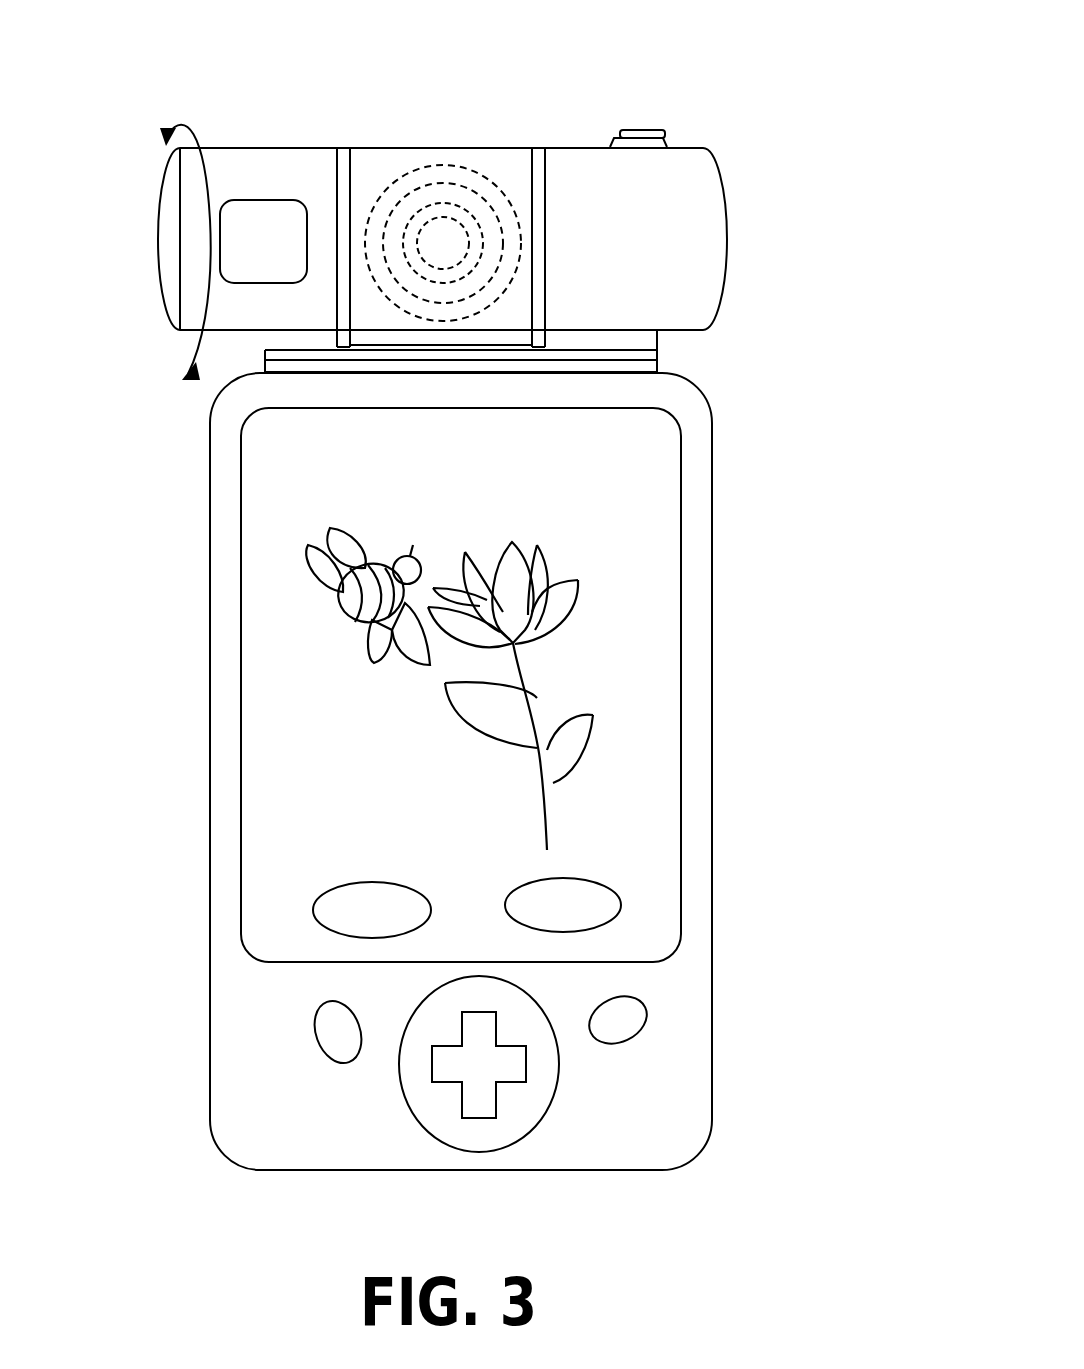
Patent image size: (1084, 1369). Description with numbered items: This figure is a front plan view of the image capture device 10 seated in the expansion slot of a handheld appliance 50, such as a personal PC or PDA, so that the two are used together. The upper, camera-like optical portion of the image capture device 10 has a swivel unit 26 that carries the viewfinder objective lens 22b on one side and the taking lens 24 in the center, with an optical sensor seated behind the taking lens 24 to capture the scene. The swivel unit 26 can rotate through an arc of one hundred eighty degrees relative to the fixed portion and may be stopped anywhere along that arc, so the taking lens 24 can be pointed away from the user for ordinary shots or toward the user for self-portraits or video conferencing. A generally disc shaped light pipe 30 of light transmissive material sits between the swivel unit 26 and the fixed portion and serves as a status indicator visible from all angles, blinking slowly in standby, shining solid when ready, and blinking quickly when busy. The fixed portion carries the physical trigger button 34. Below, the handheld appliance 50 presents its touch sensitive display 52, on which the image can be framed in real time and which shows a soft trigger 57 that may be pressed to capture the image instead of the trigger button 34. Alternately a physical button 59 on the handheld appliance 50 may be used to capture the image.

The image capture device 10 is at (738, 208).
The objective lens 22b is at (308, 200).
The taking lens 24 is at (480, 173).
The swivel unit 26 is at (542, 73).
The light pipe 30 is at (548, 215).
The trigger button 34 is at (665, 133).
The handheld appliance 50 is at (712, 553).
The display 52 is at (262, 750).
The soft trigger 57 is at (610, 883).
The button 59 is at (313, 1027).